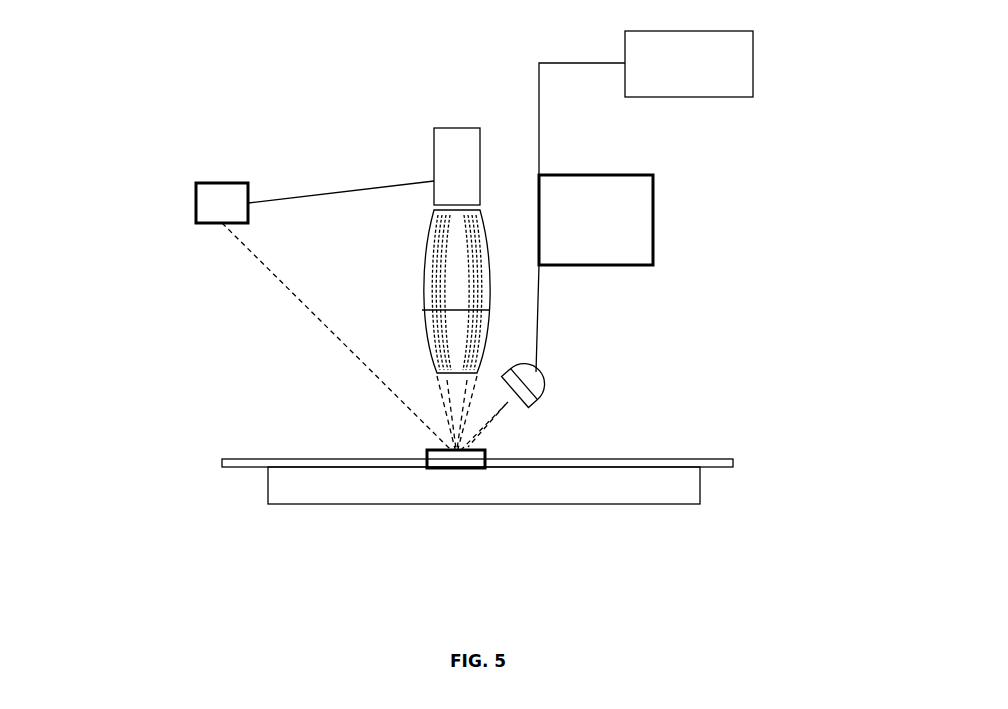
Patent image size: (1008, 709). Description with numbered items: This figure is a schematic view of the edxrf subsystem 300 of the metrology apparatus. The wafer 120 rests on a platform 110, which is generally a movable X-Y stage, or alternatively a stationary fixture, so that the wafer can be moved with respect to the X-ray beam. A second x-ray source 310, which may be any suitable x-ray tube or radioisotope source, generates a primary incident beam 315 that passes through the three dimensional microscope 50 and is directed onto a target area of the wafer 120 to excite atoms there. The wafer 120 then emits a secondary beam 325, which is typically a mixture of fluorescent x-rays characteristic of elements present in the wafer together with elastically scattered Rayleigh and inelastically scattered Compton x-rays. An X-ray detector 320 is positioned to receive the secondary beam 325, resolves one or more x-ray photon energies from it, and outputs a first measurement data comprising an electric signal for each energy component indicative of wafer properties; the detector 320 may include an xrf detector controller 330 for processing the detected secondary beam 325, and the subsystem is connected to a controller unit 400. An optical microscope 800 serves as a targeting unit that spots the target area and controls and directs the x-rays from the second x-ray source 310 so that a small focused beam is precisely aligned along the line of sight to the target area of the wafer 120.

The edxrf subsystem 300 is at (178, 80).
The second x-ray source 310 is at (435, 174).
The three dimensional microscope 50 is at (425, 293).
The primary incident beam 315 is at (433, 411).
The optical microscope 800 is at (195, 212).
The wafer 120 is at (425, 449).
The platform 110 is at (700, 489).
The X-ray detector 320 is at (538, 383).
The secondary beam 325 is at (488, 420).
The xrf detector controller 330 is at (650, 200).
The controller unit 400 is at (740, 60).